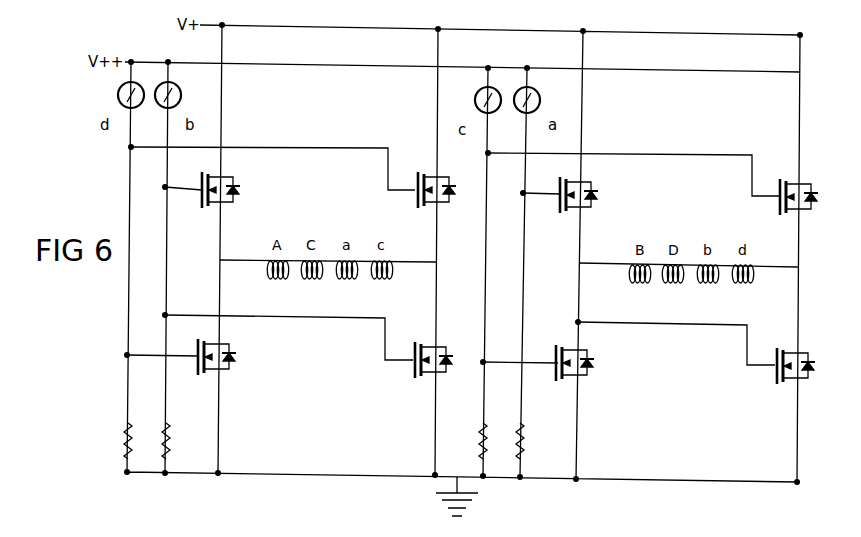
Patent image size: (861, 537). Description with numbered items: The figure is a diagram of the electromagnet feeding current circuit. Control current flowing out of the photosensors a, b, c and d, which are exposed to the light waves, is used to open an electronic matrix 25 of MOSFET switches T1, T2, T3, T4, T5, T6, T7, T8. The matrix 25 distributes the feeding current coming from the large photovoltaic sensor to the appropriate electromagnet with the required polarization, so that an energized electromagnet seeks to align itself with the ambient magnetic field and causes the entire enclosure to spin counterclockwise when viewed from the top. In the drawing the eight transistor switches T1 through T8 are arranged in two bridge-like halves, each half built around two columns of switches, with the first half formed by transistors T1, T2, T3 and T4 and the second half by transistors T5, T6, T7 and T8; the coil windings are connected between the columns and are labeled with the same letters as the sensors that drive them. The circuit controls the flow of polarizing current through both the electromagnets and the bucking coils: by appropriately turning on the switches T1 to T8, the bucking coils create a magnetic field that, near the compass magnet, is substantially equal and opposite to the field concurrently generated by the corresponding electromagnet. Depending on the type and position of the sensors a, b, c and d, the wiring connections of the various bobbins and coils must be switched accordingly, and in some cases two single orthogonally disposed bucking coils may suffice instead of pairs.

The electronic matrix 25 is at (111, 412).
The MOSFET switch T1 is at (236, 190).
The MOSFET switch T2 is at (233, 357).
The MOSFET switch T3 is at (421, 196).
The MOSFET switch T4 is at (417, 366).
The MOSFET switch T5 is at (585, 209).
The MOSFET switch T6 is at (580, 380).
The MOSFET switch T7 is at (804, 214).
The MOSFET switch T8 is at (799, 381).